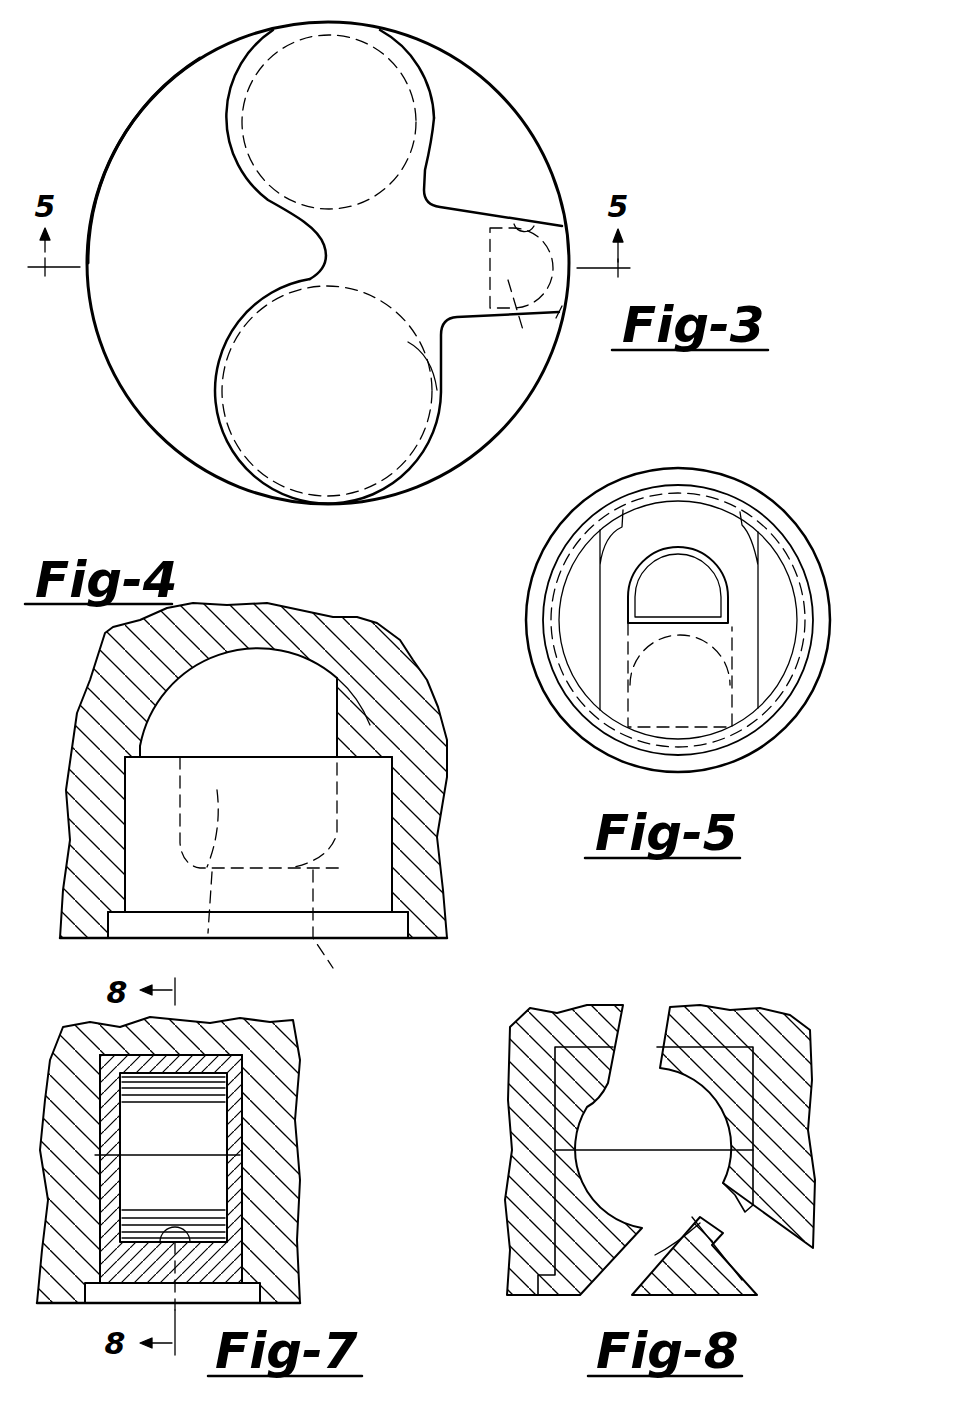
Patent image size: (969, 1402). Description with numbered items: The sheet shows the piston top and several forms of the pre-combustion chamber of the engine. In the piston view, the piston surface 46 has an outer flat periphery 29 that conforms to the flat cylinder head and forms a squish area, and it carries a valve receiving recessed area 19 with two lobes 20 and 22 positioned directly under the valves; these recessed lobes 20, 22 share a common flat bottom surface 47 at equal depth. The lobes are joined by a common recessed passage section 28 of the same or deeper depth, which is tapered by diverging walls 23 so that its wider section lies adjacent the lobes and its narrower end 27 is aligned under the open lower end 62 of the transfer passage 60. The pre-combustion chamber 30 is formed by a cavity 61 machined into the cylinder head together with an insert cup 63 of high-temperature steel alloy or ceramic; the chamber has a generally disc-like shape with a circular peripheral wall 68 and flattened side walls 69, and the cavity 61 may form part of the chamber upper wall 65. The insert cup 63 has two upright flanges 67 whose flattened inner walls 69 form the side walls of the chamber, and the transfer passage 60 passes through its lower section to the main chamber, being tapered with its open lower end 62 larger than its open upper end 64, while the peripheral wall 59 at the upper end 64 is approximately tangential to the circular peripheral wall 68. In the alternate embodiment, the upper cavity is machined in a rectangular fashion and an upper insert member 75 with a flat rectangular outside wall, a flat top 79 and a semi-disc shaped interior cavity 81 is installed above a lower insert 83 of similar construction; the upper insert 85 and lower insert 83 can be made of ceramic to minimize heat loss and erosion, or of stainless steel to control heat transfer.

In FIG. 3, the valve receiving recessed area 19 is at (420, 287).
In FIG. 3, the lobe 20 is at (408, 91).
In FIG. 3, the lobe 22 is at (402, 445).
In FIG. 3, the diverging walls 23 is at (527, 232).
In FIG. 3, the narrower end 27 is at (559, 328).
In FIG. 3, the recessed passage section 28 is at (452, 230).
In FIG. 3, the outer flat periphery 29 is at (163, 290).
In FIG. 4, the pre-combustion chamber 30 is at (392, 772).
In FIG. 3, the piston surface 46 is at (178, 126).
In FIG. 3, the common flat bottom surface 47 is at (440, 397).
In FIG. 5, the peripheral wall 59 is at (680, 563).
In FIG. 8, the peripheral wall 59 is at (723, 1287).
In FIG. 3, the transfer passage 60 is at (521, 291).
In FIG. 5, the transfer passage 60 is at (658, 601).
In FIG. 4, the transfer passage 60 is at (344, 934).
In FIG. 8, the transfer passage 60 is at (633, 1257).
In FIG. 4, the cavity 61 is at (388, 786).
In FIG. 4, the open lower end 62 is at (233, 940).
In FIG. 5, the insert cup 63 is at (751, 745).
In FIG. 4, the insert cup 63 is at (363, 875).
In FIG. 4, the open upper end 64 is at (333, 838).
In FIG. 4, the chamber upper wall 65 is at (288, 652).
In FIG. 5, the upright flanges 67 is at (573, 630).
In FIG. 4, the upright flanges 67 is at (157, 733).
In FIG. 5, the circular peripheral wall 68 is at (735, 628).
In FIG. 4, the circular peripheral wall 68 is at (260, 845).
In FIG. 8, the circular peripheral wall 68 is at (735, 1153).
In FIG. 5, the flattened side walls 69 is at (620, 527).
In FIG. 4, the flattened side walls 69 is at (327, 727).
In FIG. 7, the upper insert member 75 is at (217, 1123).
In FIG. 8, the upper insert member 75 is at (735, 1075).
In FIG. 7, the flat top 79 is at (232, 1062).
In FIG. 8, the flat top 79 is at (697, 1048).
In FIG. 7, the semi-disc shaped interior cavity 81 is at (203, 1203).
In FIG. 8, the semi-disc shaped interior cavity 81 is at (697, 1187).
In FIG. 7, the lower insert 83 is at (213, 1263).
In FIG. 8, the lower insert 83 is at (728, 1268).
In FIG. 7, the upper insert 85 is at (235, 1077).
In FIG. 8, the upper insert 85 is at (748, 1096).